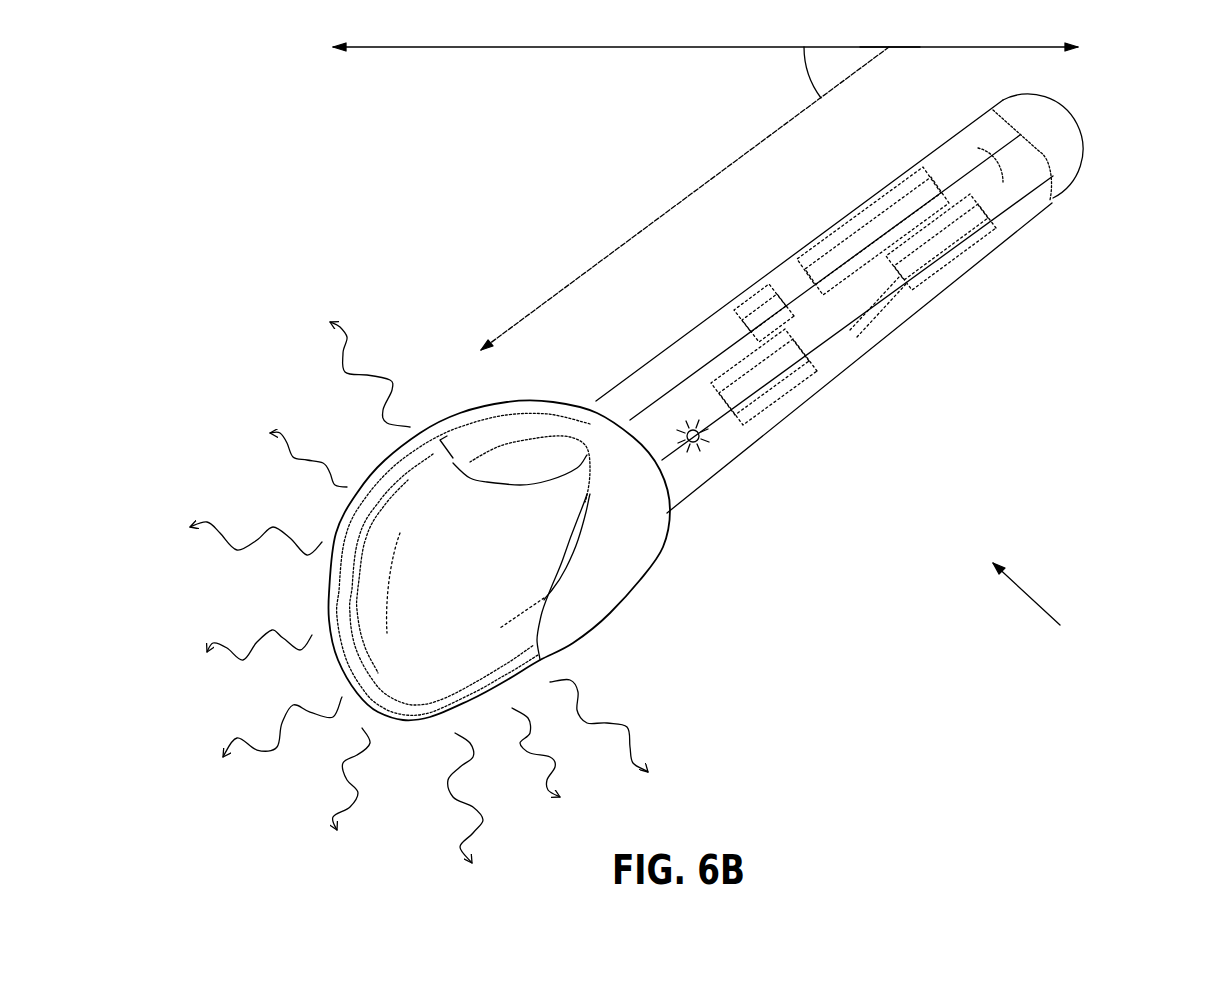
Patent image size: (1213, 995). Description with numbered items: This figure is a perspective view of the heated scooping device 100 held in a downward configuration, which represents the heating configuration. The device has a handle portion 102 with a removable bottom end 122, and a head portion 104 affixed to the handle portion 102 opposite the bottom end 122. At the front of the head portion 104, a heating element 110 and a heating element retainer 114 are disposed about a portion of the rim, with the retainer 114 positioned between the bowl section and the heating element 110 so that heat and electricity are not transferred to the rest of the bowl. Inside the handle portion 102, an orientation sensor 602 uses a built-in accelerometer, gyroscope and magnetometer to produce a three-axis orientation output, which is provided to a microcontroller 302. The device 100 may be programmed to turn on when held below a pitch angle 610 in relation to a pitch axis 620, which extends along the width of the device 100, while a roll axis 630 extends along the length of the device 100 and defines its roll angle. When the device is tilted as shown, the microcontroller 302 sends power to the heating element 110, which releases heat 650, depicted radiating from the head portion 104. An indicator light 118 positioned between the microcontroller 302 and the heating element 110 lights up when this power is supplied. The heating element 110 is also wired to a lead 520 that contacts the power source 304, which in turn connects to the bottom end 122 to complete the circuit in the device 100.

The heated scooping device 100 is at (1053, 606).
The handle portion 102 is at (1025, 228).
The head portion 104 is at (640, 573).
The heating element 110 is at (535, 660).
The heating element retainer 114 is at (435, 452).
The indicator light 118 is at (698, 440).
The bottom end 122 is at (1057, 138).
The microcontroller 302 is at (770, 378).
The power source 304 is at (866, 232).
The lead 520 is at (767, 317).
The orientation sensor 602 is at (943, 255).
The pitch angle 610 is at (805, 77).
The pitch axis 620 is at (889, 48).
The roll axis 630 is at (485, 48).
The heat 650 is at (203, 520).